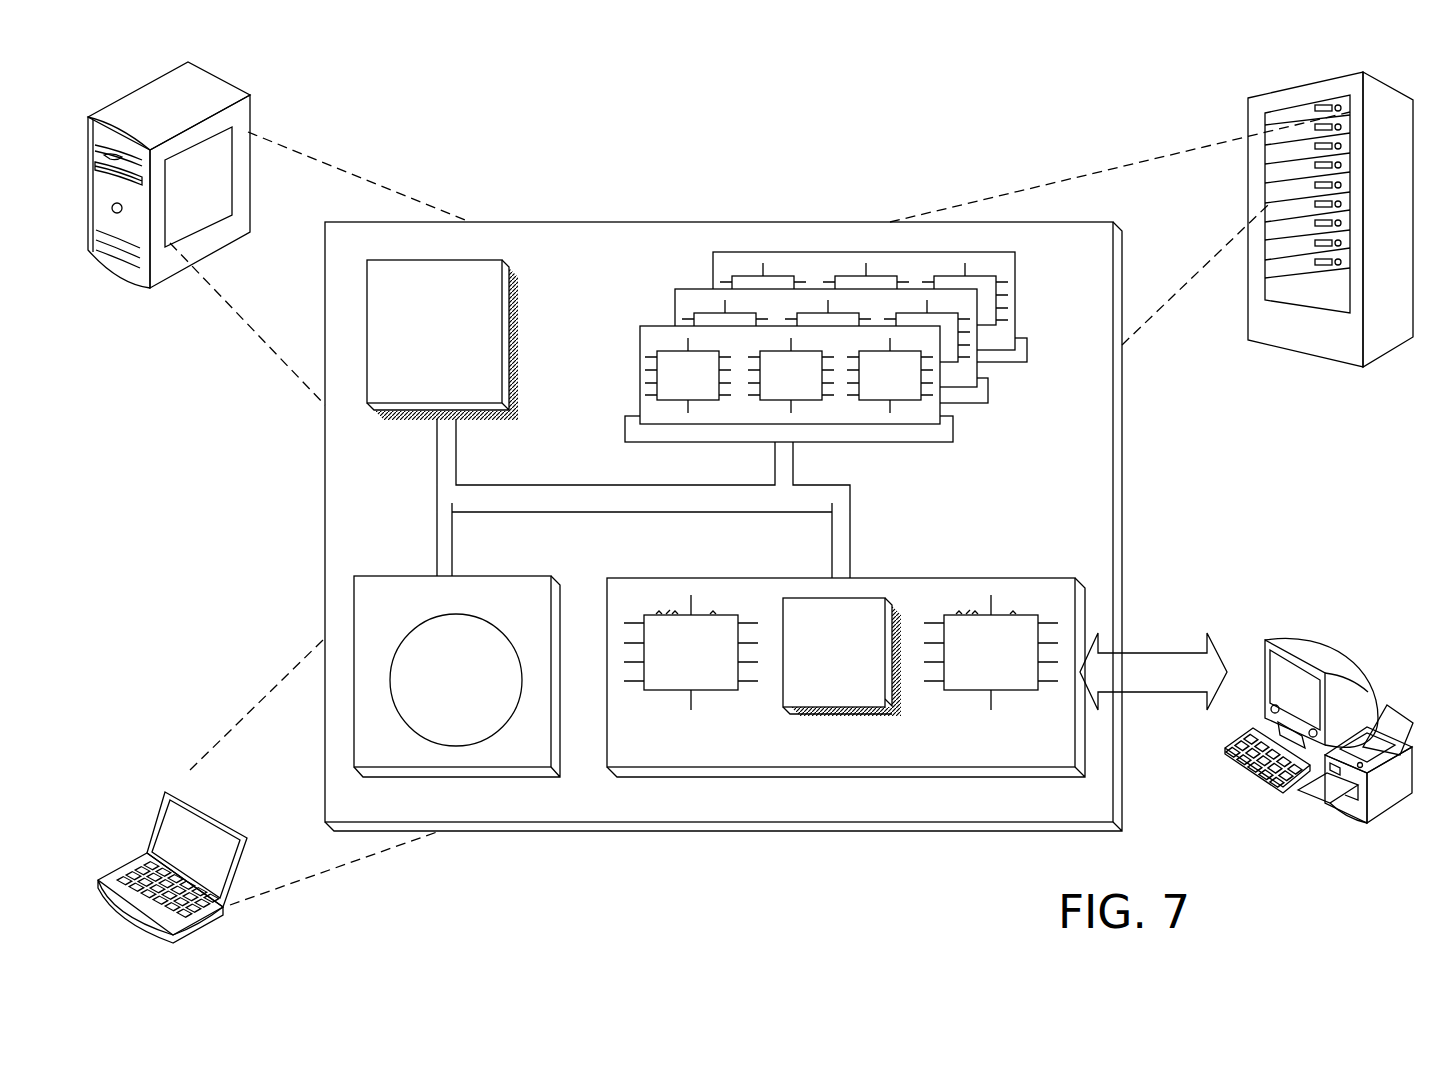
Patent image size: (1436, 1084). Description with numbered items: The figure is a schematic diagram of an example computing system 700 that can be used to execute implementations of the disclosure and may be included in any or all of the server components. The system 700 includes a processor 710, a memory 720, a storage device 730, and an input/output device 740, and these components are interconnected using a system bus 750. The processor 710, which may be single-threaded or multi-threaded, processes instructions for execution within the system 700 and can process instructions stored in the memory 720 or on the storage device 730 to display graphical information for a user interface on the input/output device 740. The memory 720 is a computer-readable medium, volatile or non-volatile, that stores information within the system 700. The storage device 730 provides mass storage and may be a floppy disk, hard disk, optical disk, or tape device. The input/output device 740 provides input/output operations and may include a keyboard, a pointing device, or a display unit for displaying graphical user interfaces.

The computing system 700 is at (536, 143).
The processor 710 is at (497, 397).
The memory 720 is at (1020, 400).
The storage device 730 is at (543, 759).
The input/output device 740 is at (1263, 645).
The system bus 750 is at (637, 504).